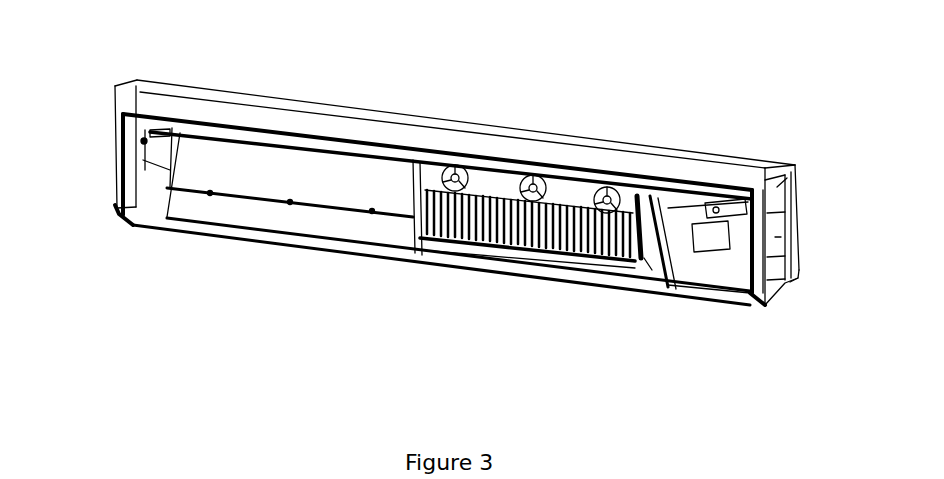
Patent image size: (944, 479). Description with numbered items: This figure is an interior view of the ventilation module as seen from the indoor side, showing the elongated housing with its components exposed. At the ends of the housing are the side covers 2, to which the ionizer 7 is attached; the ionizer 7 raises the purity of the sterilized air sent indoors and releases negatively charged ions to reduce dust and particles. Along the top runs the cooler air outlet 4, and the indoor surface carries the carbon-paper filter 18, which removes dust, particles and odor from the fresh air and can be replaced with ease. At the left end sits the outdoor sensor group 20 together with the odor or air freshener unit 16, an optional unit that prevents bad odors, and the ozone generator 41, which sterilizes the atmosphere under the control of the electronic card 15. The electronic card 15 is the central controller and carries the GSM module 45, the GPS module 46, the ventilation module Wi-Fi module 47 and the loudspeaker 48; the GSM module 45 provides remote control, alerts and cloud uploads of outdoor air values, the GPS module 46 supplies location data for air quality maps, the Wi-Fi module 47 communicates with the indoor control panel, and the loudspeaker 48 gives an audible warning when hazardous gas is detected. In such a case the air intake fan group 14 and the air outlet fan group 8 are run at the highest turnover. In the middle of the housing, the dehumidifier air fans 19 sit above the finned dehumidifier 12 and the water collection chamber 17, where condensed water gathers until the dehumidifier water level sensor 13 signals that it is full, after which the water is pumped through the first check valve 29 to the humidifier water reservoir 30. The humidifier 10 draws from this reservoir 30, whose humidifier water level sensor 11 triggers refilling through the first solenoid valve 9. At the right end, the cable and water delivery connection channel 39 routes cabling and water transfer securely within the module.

The side cover 2 is at (778, 187).
The cooler air outlet 4 is at (457, 123).
The ionizer 7 is at (775, 238).
The air outlet fan group 8 is at (723, 273).
The first solenoid valve 9 is at (702, 208).
The humidifier 10 is at (632, 263).
The humidifier water level sensor 11 is at (661, 272).
The dehumidifier 12 is at (528, 247).
The dehumidifier water level sensor 13 is at (417, 263).
The air intake fan group 14 is at (290, 202).
The electronic card 15 is at (240, 173).
The odor or air freshener unit 16 is at (162, 175).
The water collection chamber 17 is at (503, 246).
The carbon-paper filter 18 is at (377, 260).
The dehumidifier air fans 19 is at (537, 180).
The outdoor sensor group 20 is at (130, 80).
The first check valve 29 is at (607, 280).
The humidifier water reservoir 30 is at (647, 263).
The cable and water delivery connection channel 39 is at (790, 273).
The ozone generator 41 is at (117, 212).
The GSM module 45 is at (218, 153).
The GPS module 46 is at (253, 160).
The ventilation module Wi-Fi module 47 is at (290, 160).
The loudspeaker 48 is at (318, 167).